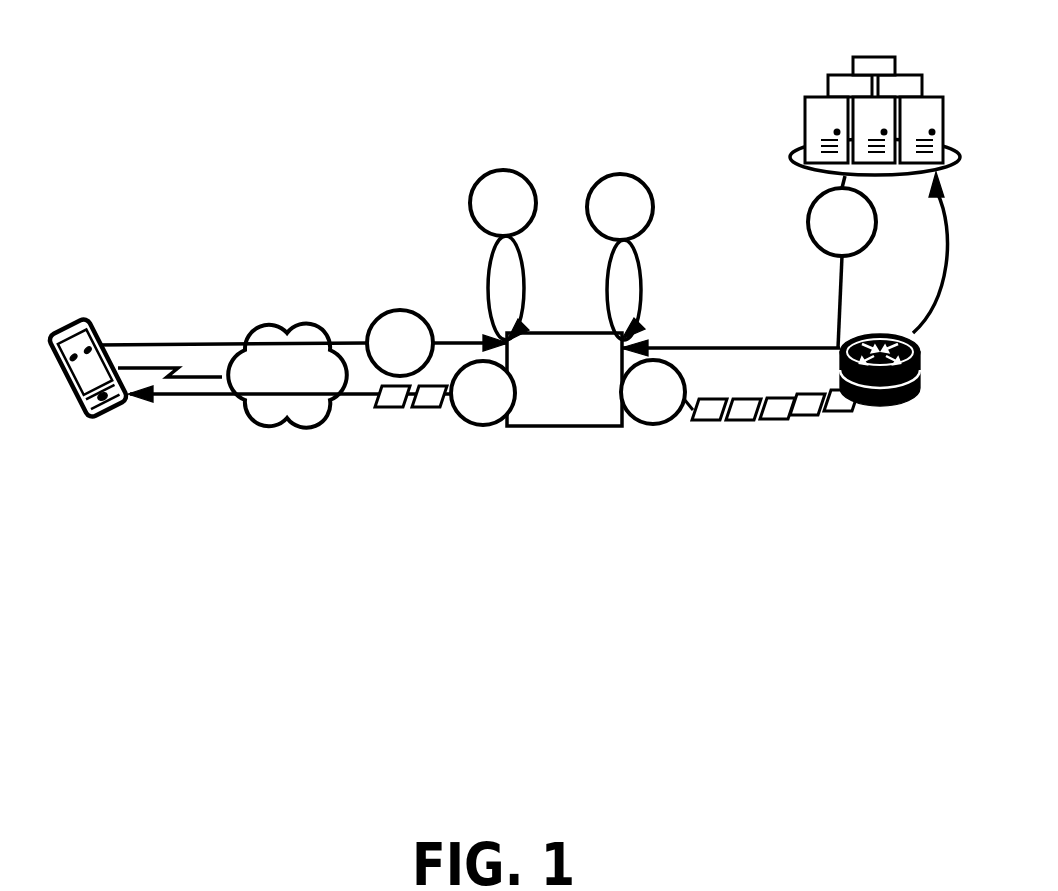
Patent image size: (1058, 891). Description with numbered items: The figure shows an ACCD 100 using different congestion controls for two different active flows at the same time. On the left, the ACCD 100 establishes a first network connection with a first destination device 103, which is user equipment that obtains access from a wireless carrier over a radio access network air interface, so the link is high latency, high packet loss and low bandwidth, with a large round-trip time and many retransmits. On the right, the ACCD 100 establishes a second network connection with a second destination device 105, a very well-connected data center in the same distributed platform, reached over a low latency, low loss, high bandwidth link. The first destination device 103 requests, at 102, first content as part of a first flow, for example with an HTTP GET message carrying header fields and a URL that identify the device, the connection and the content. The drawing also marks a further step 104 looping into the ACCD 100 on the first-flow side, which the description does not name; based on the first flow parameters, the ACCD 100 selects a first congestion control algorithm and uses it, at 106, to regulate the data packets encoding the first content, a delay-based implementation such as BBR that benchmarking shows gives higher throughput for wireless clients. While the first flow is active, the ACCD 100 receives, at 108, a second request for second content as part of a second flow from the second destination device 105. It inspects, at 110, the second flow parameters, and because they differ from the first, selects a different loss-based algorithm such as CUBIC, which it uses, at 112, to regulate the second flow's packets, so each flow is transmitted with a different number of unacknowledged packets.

The ACCD 100 is at (547, 390).
The first content request 102 is at (383, 353).
The first destination device 103 is at (95, 413).
The first connection 104 is at (486, 213).
The second destination device 105 is at (877, 57).
The use of first congestion control algorithm 106 is at (471, 493).
The receipt of second request 108 is at (825, 232).
The inspection of second flow parameters 110 is at (603, 217).
The use of second congestion control algorithm 112 is at (644, 492).